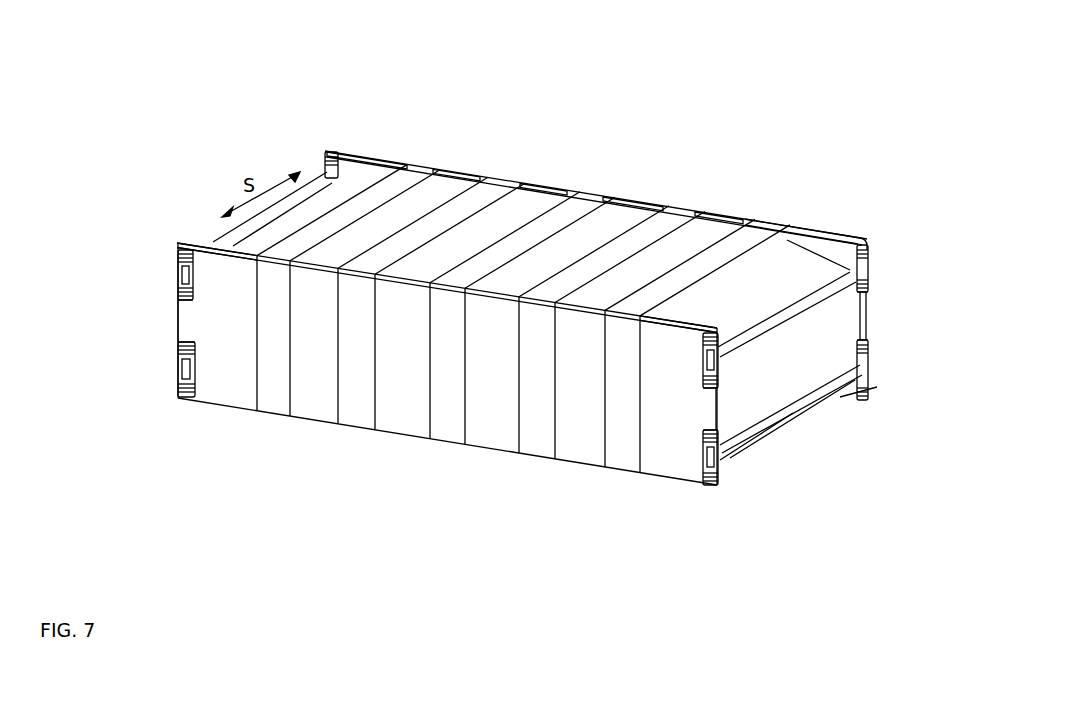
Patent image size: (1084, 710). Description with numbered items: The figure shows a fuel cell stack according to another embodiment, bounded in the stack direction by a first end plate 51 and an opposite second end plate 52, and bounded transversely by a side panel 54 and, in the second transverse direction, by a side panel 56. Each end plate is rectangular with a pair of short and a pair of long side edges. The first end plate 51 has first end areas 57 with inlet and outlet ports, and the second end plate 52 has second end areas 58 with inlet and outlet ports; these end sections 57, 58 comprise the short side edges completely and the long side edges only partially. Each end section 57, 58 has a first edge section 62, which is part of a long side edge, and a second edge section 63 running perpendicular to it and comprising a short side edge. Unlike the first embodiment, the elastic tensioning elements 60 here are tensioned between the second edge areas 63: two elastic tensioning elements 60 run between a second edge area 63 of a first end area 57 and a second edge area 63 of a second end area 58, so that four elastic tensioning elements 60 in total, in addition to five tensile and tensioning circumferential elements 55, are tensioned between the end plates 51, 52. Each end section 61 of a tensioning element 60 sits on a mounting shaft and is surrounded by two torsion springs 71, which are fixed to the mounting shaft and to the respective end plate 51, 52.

The first end plate 51 is at (417, 427).
The second end plate 52 is at (540, 185).
The side panel 54 is at (837, 388).
The tensile and tensioning circumferential element 55 is at (403, 165).
The side panel 56 is at (607, 233).
The first end area 57 is at (213, 398).
The second end area 58 is at (343, 156).
The elastic tensioning element 60 is at (218, 241).
The end section of tensioning element 61 is at (178, 280).
The first edge section 62 is at (247, 413).
The second edge section 63 is at (178, 328).
The torsion spring 71 is at (178, 357).